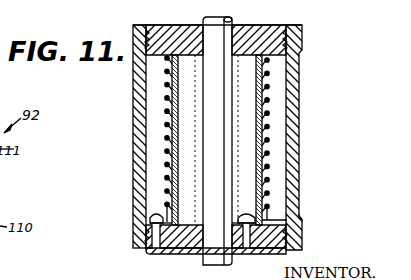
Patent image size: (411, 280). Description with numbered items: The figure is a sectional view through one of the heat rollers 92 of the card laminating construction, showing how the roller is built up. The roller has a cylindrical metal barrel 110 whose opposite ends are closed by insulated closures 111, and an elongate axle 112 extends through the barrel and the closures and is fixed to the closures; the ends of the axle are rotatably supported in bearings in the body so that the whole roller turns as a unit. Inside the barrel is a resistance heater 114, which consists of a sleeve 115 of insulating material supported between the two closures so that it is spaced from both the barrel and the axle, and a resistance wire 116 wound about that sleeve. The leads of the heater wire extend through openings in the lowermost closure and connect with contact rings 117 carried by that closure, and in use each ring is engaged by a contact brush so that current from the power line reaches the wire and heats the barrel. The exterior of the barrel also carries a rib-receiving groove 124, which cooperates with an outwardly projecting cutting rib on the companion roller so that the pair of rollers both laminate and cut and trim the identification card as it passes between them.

The heat roller 92 is at (305, 38).
The cylindrical metal barrel 110 is at (293, 153).
The insulated closure 111 is at (176, 32).
The axle 112 is at (233, 26).
The resistance heater 114 is at (160, 156).
The sleeve 115 is at (270, 99).
The resistance wire 116 is at (166, 86).
The contact ring 117 is at (165, 251).
The rib-receiving groove 124 is at (298, 221).